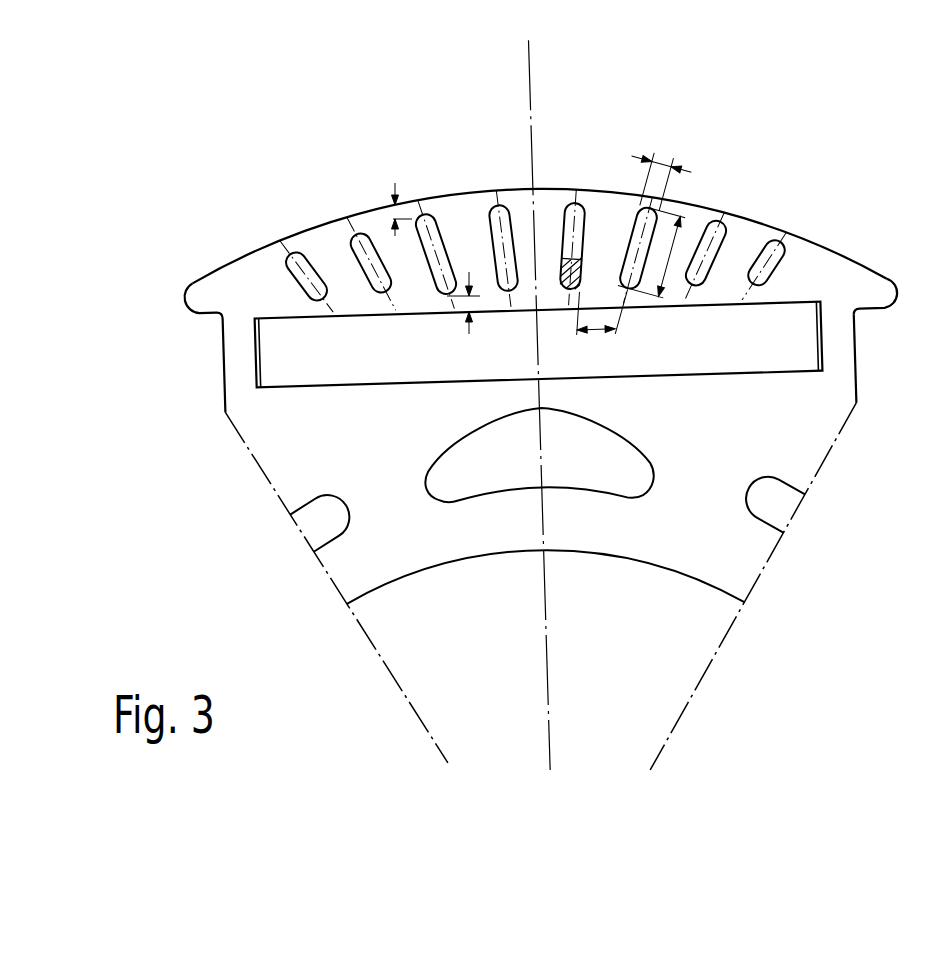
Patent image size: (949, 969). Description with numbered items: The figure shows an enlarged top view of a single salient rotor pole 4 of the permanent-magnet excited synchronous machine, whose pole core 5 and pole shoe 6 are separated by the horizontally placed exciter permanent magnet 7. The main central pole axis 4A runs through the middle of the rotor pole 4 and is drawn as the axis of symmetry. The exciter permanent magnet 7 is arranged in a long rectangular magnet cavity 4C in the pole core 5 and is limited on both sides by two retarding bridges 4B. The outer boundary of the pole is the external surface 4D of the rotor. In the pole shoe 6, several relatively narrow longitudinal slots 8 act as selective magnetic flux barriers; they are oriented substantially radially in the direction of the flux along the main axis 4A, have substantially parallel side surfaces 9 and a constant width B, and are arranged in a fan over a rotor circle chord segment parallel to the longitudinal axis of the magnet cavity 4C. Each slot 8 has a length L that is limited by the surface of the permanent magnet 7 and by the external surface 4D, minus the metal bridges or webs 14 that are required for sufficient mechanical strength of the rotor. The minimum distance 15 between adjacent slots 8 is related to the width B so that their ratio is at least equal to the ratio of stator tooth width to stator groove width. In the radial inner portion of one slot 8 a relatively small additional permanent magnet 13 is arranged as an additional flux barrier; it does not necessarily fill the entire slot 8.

The rotor pole 4 is at (469, 429).
The main central pole axis 4A is at (530, 115).
The retarding bridge 4B is at (272, 354).
The magnet cavity 4C is at (312, 385).
The external surface 4D is at (820, 245).
The pole core 5 is at (860, 379).
The pole shoe 6 is at (828, 270).
The exciter permanent magnet 7 is at (766, 345).
The longitudinal slot 8 is at (558, 212).
The side surface 9 is at (368, 258).
The additional permanent magnet 13 is at (557, 258).
The metal bridge 14 is at (393, 182).
The minimum distance 15 is at (598, 331).
The width B is at (665, 182).
The length L is at (671, 250).